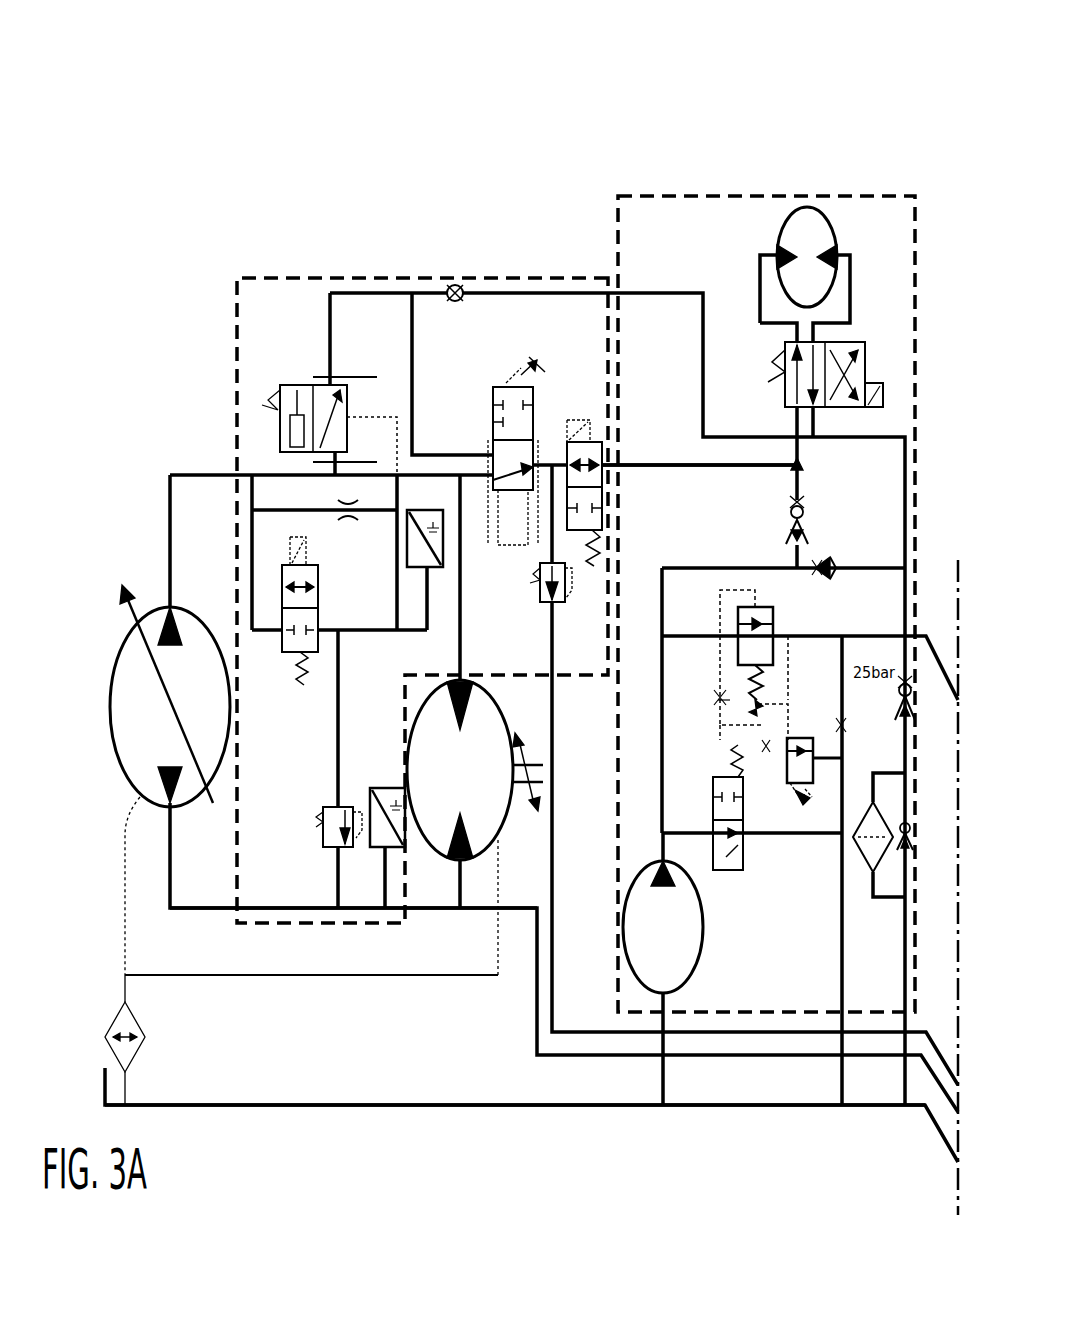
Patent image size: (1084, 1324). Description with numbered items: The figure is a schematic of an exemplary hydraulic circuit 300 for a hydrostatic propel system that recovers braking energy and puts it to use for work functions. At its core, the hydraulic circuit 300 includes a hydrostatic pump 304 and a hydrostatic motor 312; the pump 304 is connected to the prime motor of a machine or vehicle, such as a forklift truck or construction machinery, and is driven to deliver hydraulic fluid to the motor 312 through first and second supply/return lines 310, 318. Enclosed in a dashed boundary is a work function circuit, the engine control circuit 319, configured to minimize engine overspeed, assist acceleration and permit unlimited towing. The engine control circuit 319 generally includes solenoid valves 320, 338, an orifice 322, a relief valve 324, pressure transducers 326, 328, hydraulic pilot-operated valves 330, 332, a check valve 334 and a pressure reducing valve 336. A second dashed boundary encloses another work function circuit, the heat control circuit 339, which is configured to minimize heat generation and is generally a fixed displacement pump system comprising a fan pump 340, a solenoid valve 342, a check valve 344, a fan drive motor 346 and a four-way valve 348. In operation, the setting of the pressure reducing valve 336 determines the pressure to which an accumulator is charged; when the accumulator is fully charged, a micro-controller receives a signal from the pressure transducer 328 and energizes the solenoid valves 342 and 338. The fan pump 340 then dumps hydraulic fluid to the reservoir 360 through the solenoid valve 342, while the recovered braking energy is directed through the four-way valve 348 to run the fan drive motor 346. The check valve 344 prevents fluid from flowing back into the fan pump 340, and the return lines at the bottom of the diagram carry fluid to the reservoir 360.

The hydraulic circuit 300 is at (705, 13).
The hydrostatic pump 304 is at (142, 594).
The supply/return line 310 is at (465, 570).
The hydrostatic motor 312 is at (500, 842).
The supply/return line 318 is at (423, 920).
The engine control circuit 319 is at (266, 268).
The solenoid valve 320 is at (283, 658).
The orifice 322 is at (351, 520).
The relief valve 324 is at (348, 855).
The pressure transducer 326 is at (378, 782).
The pressure transducer 328 is at (412, 500).
The hydraulic pilot-operated valve 330 is at (325, 440).
The hydraulic pilot-operated valve 332 is at (520, 355).
The check valve 334 is at (452, 286).
The pressure reducing valve 336 is at (561, 610).
The solenoid valve 338 is at (571, 436).
The heat control circuit 339 is at (653, 188).
The fan pump 340 is at (622, 954).
The solenoid valve 342 is at (744, 866).
The check valve 344 is at (790, 506).
The fan drive motor 346 is at (816, 198).
The 4-way valve 348 is at (864, 335).
The reservoir 360 is at (512, 1116).